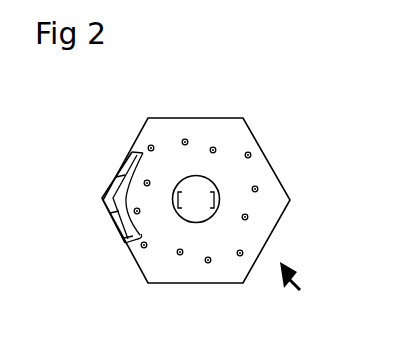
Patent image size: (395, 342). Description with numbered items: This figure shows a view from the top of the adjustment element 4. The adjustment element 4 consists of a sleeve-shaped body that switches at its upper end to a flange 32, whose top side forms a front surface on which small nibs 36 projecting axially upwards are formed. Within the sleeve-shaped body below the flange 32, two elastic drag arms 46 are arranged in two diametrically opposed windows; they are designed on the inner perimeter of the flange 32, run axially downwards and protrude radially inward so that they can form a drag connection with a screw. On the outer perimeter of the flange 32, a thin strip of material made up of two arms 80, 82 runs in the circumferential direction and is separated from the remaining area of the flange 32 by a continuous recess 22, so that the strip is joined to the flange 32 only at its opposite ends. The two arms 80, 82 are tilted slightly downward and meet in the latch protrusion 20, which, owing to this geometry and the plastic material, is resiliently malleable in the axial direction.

The adjustment element 4 is at (298, 293).
The latch protrusion 20 is at (90, 178).
The continuous recess 22 is at (136, 151).
The flange 32 is at (272, 170).
The nibs 36 is at (213, 147).
The drag arms 46 is at (210, 203).
The arm 80 is at (115, 223).
The arm 82 is at (113, 178).